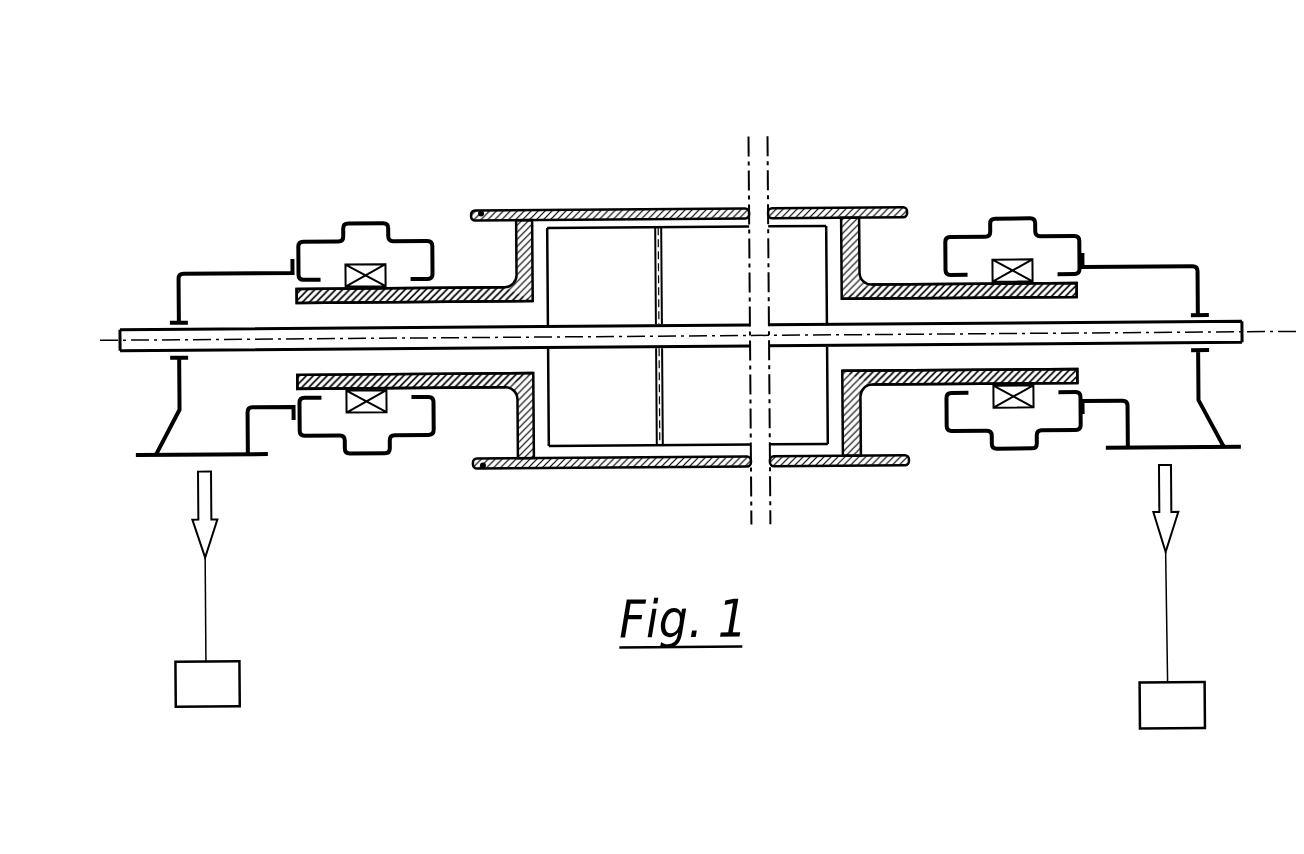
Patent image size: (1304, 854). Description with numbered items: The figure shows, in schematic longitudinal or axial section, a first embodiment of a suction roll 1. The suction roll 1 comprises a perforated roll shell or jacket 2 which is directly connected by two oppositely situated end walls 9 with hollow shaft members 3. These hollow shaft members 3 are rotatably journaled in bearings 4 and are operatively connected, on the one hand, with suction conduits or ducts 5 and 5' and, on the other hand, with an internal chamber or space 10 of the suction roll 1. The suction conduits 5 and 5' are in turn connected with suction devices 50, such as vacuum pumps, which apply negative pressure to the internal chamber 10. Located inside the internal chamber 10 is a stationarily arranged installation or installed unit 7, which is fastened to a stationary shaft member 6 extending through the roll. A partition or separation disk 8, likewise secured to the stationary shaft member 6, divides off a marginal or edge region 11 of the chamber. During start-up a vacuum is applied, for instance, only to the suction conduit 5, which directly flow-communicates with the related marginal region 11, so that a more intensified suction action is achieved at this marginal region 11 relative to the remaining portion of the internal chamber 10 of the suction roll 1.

The suction roll 1 is at (858, 172).
The perforated roll shell 2 is at (687, 210).
The hollow shaft member 3 is at (907, 290).
The bearing 4 is at (365, 410).
The suction conduit 5 is at (1171, 397).
The suction conduit 5' is at (203, 402).
The shaft member 6 is at (1213, 331).
The installed unit 7 is at (797, 251).
The partition disk 8 is at (656, 250).
The end wall 9 is at (517, 253).
The internal chamber 10 is at (832, 424).
The marginal region 11 is at (589, 446).
The suction device 50 is at (223, 677).